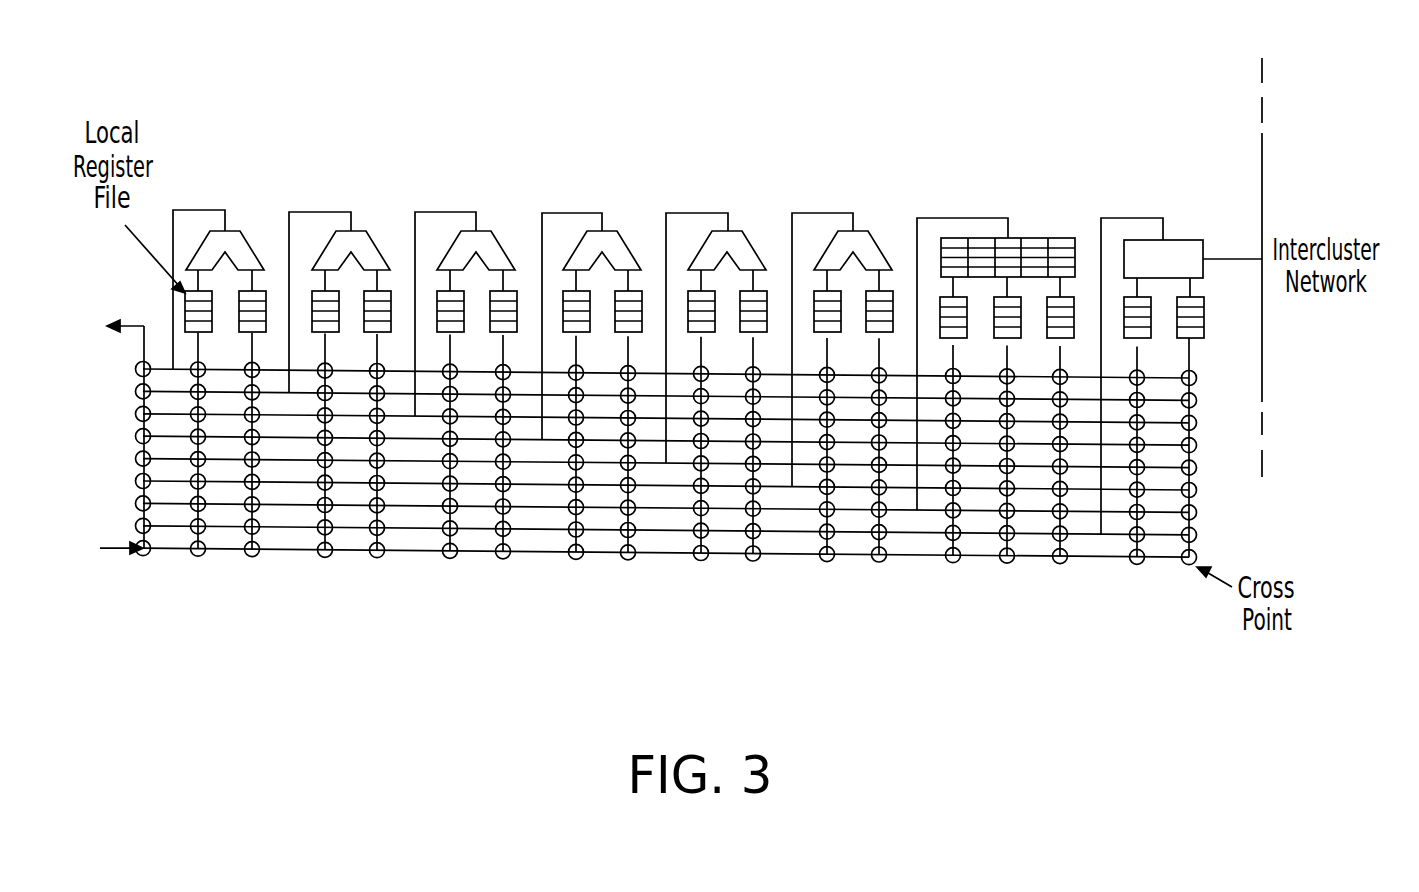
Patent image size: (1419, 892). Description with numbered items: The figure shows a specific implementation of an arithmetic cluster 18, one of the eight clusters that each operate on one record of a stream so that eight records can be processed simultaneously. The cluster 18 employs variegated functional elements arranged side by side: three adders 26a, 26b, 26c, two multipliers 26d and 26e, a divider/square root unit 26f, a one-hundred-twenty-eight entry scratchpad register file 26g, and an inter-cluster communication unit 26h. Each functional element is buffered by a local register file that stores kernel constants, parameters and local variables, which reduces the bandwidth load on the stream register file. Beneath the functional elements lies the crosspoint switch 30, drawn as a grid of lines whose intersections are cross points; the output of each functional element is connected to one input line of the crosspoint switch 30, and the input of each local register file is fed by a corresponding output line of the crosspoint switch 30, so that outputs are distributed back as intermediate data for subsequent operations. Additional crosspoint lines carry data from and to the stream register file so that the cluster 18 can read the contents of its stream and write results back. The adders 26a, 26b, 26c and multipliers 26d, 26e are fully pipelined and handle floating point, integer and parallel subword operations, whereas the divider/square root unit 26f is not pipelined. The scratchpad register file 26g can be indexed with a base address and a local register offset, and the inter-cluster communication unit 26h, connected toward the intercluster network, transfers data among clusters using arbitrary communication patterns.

The adder 26a is at (249, 233).
The adder 26b is at (375, 235).
The adder 26c is at (500, 235).
The multiplier 26d is at (625, 238).
The multiplier 26e is at (750, 238).
The divider/square root unit 26f is at (855, 256).
The scratchpad register file 26g is at (1038, 238).
The inter-cluster communication unit 26h is at (1190, 240).
The arithmetic cluster 18 is at (93, 422).
The crosspoint switch 30 is at (121, 471).